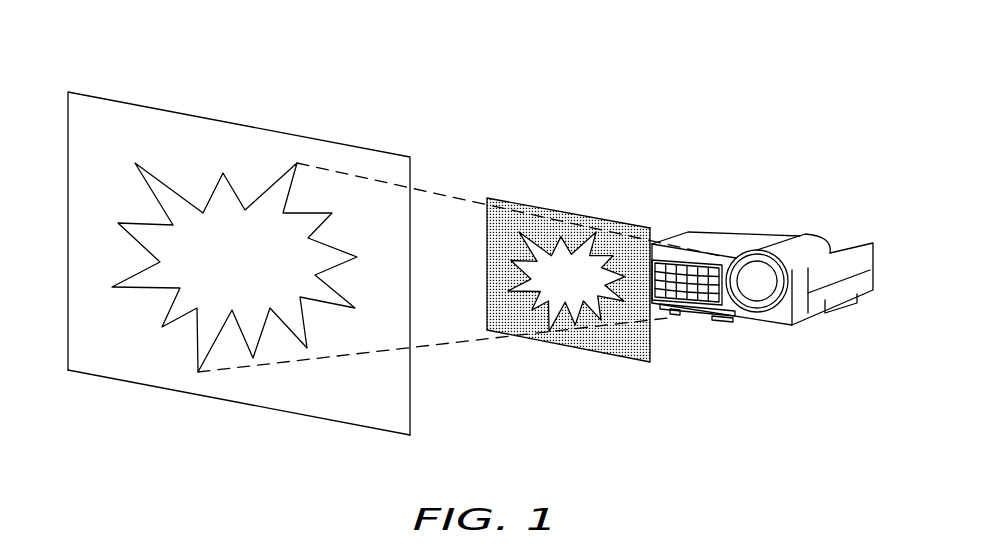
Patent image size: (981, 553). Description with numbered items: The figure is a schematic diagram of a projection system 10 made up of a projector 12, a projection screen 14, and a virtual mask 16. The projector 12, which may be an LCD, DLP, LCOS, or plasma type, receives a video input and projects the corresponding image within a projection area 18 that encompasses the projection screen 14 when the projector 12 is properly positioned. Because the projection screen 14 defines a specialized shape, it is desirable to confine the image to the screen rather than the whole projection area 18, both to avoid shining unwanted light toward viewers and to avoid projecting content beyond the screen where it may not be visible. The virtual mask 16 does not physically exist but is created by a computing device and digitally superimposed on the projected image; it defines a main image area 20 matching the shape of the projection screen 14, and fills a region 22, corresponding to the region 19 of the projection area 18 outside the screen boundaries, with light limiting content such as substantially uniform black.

The projection system 10 is at (524, 64).
The projector 12 is at (755, 238).
The projection screen 14 is at (197, 337).
The virtual mask 16 is at (603, 222).
The projection area 18 is at (150, 108).
The region of projection area outside the projection screen 19 is at (325, 403).
The main image area 20 is at (547, 267).
The region 22 is at (630, 343).